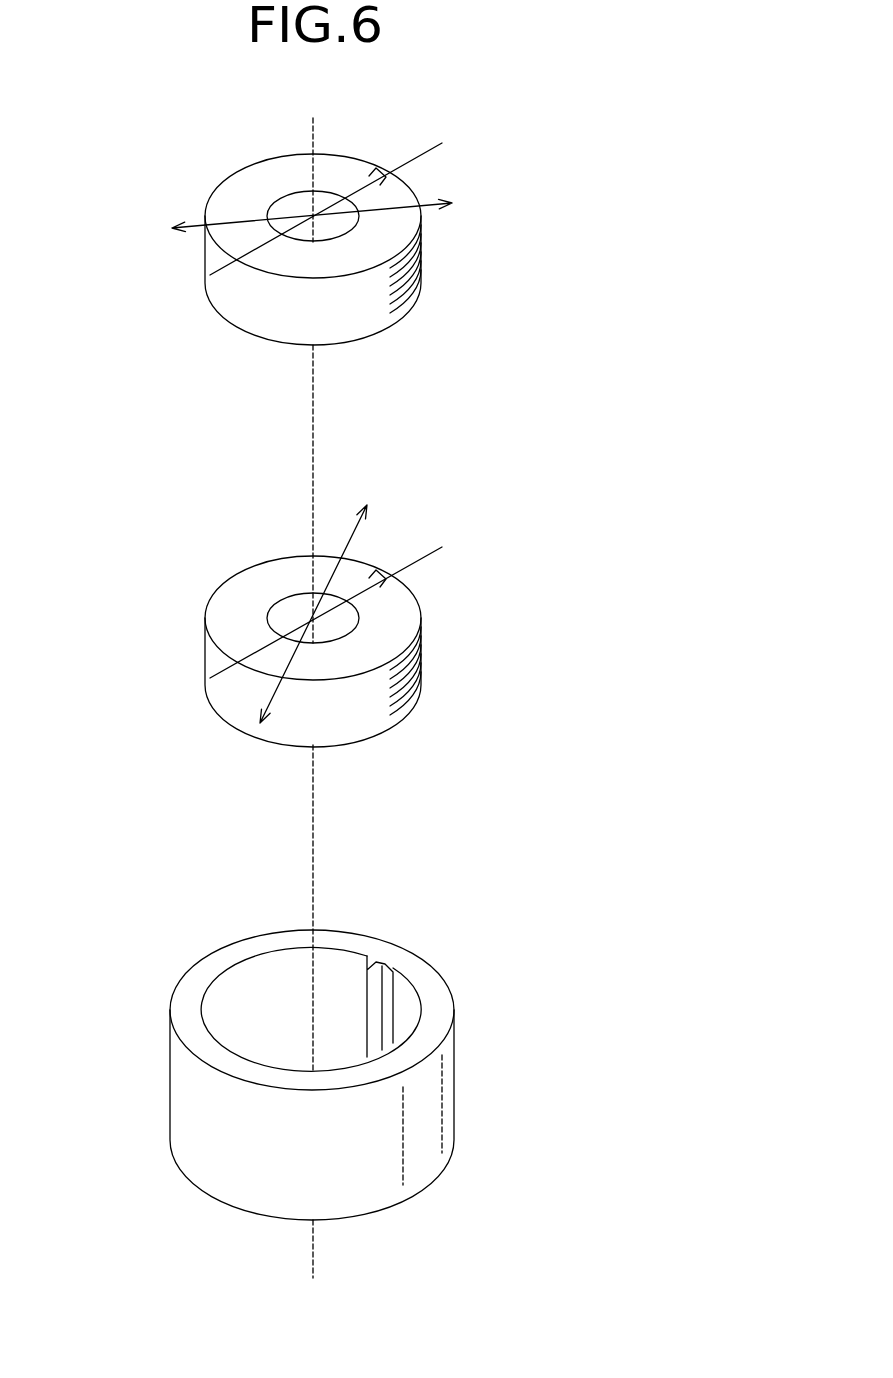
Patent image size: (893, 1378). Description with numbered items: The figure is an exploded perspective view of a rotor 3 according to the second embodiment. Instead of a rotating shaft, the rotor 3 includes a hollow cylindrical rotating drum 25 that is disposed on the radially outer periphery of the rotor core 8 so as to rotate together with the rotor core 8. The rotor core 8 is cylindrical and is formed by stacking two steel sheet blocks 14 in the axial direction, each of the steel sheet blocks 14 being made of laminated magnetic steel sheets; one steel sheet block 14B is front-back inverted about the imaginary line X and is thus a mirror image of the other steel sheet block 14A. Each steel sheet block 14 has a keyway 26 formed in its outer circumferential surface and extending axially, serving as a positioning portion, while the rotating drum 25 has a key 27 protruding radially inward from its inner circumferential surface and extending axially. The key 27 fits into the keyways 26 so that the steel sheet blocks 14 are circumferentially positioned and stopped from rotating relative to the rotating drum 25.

The rotor 3 is at (476, 110).
The rotor core 8 is at (67, 353).
The steel sheet block 14 is at (337, 419).
The steel sheet block 14A is at (242, 308).
The steel sheet block 14B is at (210, 662).
The rotating drum 25 is at (442, 1112).
The keyway 26 is at (385, 176).
The key 27 is at (381, 972).